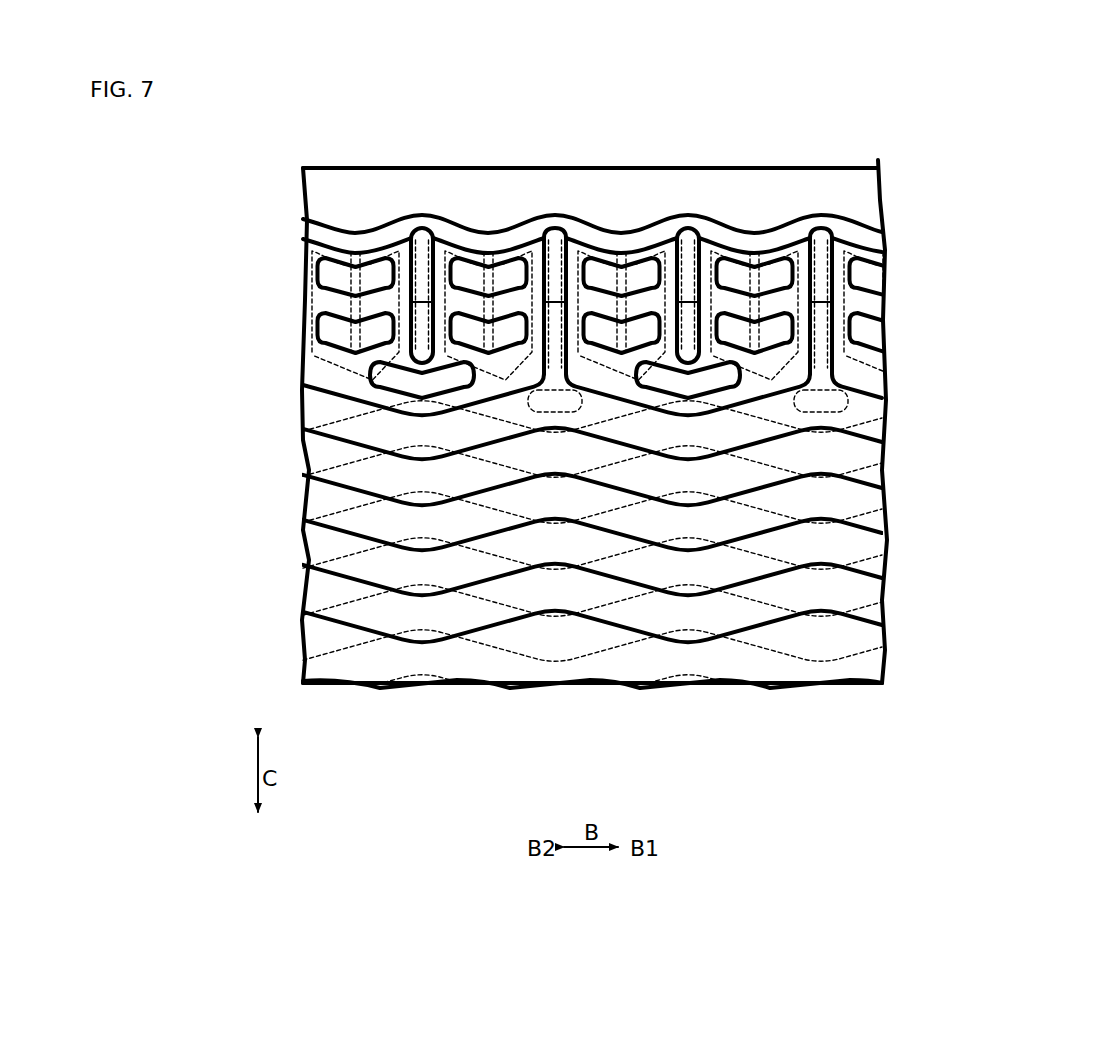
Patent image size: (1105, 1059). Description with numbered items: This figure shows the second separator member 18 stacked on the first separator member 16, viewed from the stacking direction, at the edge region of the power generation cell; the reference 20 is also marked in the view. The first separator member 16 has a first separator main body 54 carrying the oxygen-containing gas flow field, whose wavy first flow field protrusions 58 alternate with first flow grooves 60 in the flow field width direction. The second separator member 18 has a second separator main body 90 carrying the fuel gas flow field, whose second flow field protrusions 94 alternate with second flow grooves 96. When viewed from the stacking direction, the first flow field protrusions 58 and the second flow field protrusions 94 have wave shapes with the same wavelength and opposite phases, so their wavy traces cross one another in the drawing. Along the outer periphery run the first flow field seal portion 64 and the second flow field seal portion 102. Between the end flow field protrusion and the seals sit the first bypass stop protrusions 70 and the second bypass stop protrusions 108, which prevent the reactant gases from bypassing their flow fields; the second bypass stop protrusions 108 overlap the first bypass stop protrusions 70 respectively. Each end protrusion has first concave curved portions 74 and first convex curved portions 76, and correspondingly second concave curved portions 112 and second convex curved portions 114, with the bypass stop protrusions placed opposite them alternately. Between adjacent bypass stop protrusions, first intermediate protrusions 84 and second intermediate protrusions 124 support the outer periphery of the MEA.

The first separator member 16 is at (844, 163).
The second separator member 18 is at (861, 163).
The tread portion 20 is at (261, 112).
The first separator main body 54 is at (868, 215).
The first flow field protrusion 58 is at (548, 502).
The first flow groove 60 is at (612, 453).
The first flow field seal portion 64 is at (342, 236).
The first bypass stop protrusion 70 is at (421, 262).
The first concave curved portion 74 is at (579, 417).
The first convex curved portion 76 is at (445, 383).
The first intermediate protrusion 84 is at (633, 262).
The second separator main body 90 is at (868, 190).
The second flow field protrusion 94 is at (757, 522).
The second flow groove 96 is at (797, 455).
The second flow field seal portion 102 is at (340, 232).
The second bypass stop protrusion 108 is at (408, 312).
The second concave curved portion 112 is at (425, 450).
The second convex curved portion 114 is at (517, 410).
The second intermediate protrusion 124 is at (508, 327).